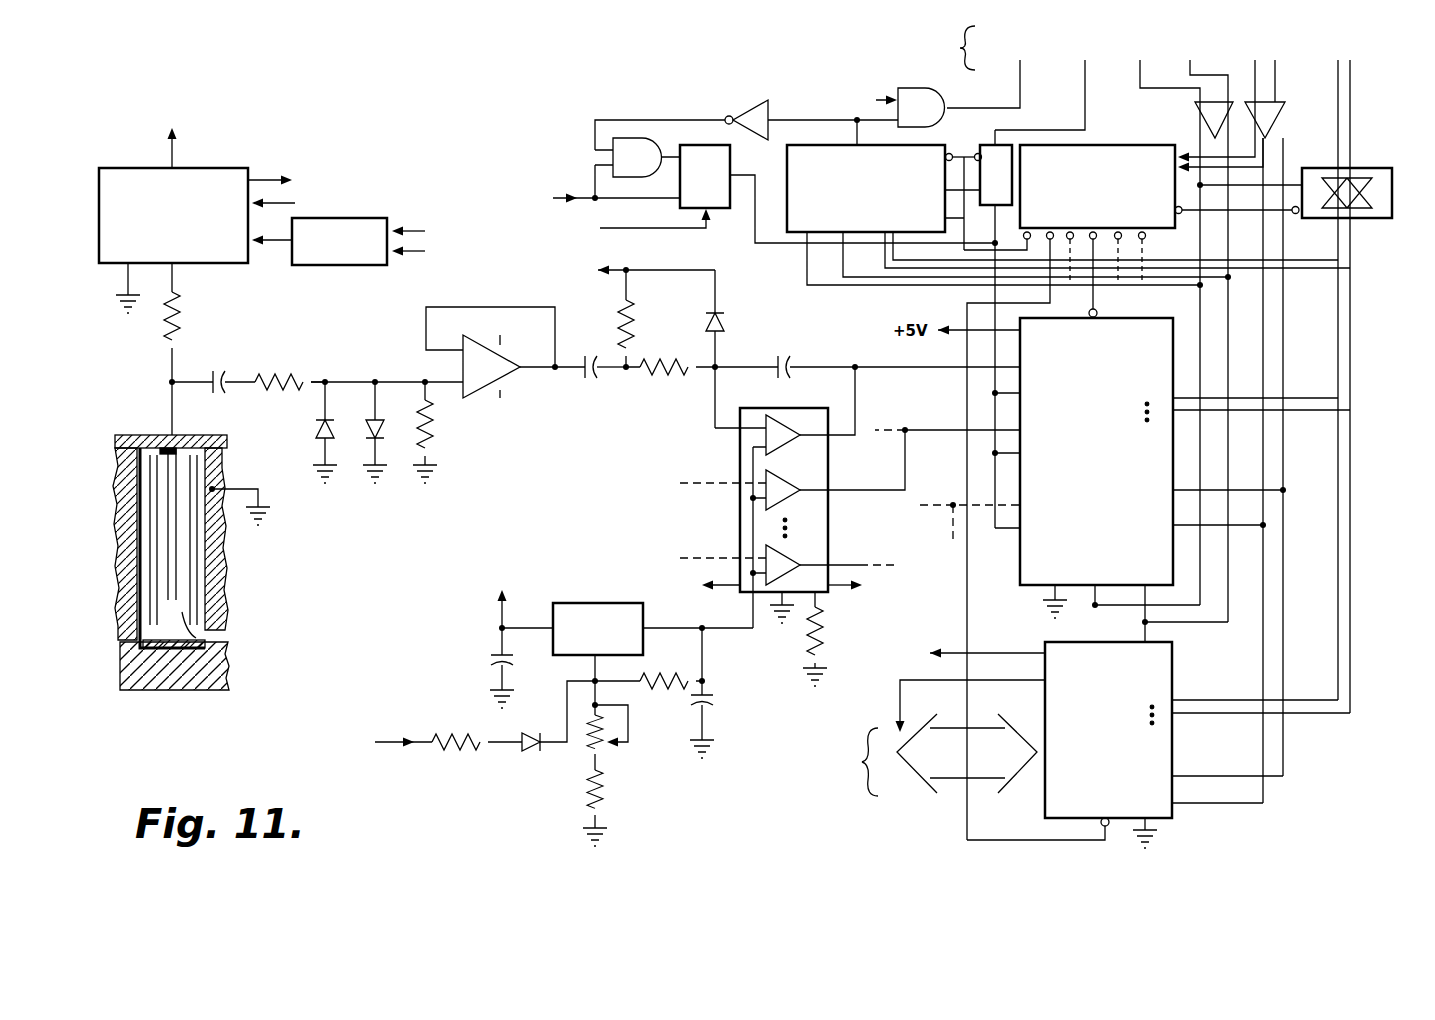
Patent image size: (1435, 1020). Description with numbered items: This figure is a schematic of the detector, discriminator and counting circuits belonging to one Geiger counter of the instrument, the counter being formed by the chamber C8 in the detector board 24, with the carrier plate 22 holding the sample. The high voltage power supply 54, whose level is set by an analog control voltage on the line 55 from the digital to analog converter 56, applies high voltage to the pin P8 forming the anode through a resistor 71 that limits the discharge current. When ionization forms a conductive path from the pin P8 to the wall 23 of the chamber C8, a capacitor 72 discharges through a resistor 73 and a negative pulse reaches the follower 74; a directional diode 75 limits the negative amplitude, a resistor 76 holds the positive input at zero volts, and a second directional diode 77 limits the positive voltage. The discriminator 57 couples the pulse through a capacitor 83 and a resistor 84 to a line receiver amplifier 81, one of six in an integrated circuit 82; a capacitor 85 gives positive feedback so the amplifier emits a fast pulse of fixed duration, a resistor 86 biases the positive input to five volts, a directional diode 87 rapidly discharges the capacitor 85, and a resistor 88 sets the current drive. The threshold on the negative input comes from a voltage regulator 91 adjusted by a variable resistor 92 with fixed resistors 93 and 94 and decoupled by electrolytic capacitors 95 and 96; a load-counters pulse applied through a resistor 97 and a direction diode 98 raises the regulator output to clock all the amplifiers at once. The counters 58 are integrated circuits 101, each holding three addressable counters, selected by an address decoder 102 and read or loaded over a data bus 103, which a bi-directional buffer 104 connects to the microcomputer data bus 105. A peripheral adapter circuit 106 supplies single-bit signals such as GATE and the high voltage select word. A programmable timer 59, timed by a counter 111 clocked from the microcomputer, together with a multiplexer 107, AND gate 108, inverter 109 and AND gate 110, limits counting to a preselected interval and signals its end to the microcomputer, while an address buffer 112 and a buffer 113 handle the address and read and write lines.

The high voltage power supply 54 is at (225, 168).
The line 55 is at (282, 244).
The digital to analog converter 56 is at (330, 265).
The resistor 71 is at (180, 332).
The capacitor 72 is at (222, 370).
The resistor 73 is at (282, 368).
The follower 74 is at (518, 374).
The directional diode 75 is at (320, 442).
The resistor 76 is at (432, 430).
The second directional diode 77 is at (371, 442).
The detector board 24 is at (200, 433).
The detector tube wall 23 is at (210, 476).
The carrier plate 22 is at (205, 665).
The chamber C8 is at (183, 538).
The pin P8 is at (178, 575).
The capacitor 83 is at (594, 380).
The resistor 84 is at (664, 380).
The capacitor 85 is at (806, 322).
The resistor 86 is at (640, 313).
The directional diode 87 is at (722, 312).
The line receiver amplifier 81 is at (790, 431).
The integrated circuit 82 is at (828, 508).
The resistor 88 is at (824, 626).
The discriminator circuit 57 is at (630, 460).
The counters 58 is at (952, 395).
The programmable timer counter 59 is at (788, 170).
The multiplexer 107 is at (722, 212).
The AND gate 108 is at (630, 136).
The inverter 109 is at (760, 106).
The AND gate 110 is at (947, 95).
The counter 111 is at (983, 143).
The address decoder 102 is at (1070, 141).
The buffer 113 is at (1194, 103).
The address buffer 112 is at (1285, 104).
The data bus of the microcomputer 105 is at (1345, 138).
The bi-directional buffer 104 is at (1324, 213).
The integrated circuit 101 is at (1128, 311).
The data bus 103 is at (1325, 400).
The peripheral adapter circuit 106 is at (1172, 672).
The voltage regulator 91 is at (590, 603).
The variable resistor 92 is at (608, 760).
The fixed resistor 93 is at (606, 810).
The fixed resistor 94 is at (652, 672).
The electrolytic capacitor 95 is at (490, 661).
The electrolytic capacitor 96 is at (716, 712).
The resistor 97 is at (462, 756).
The direction diode 98 is at (536, 758).